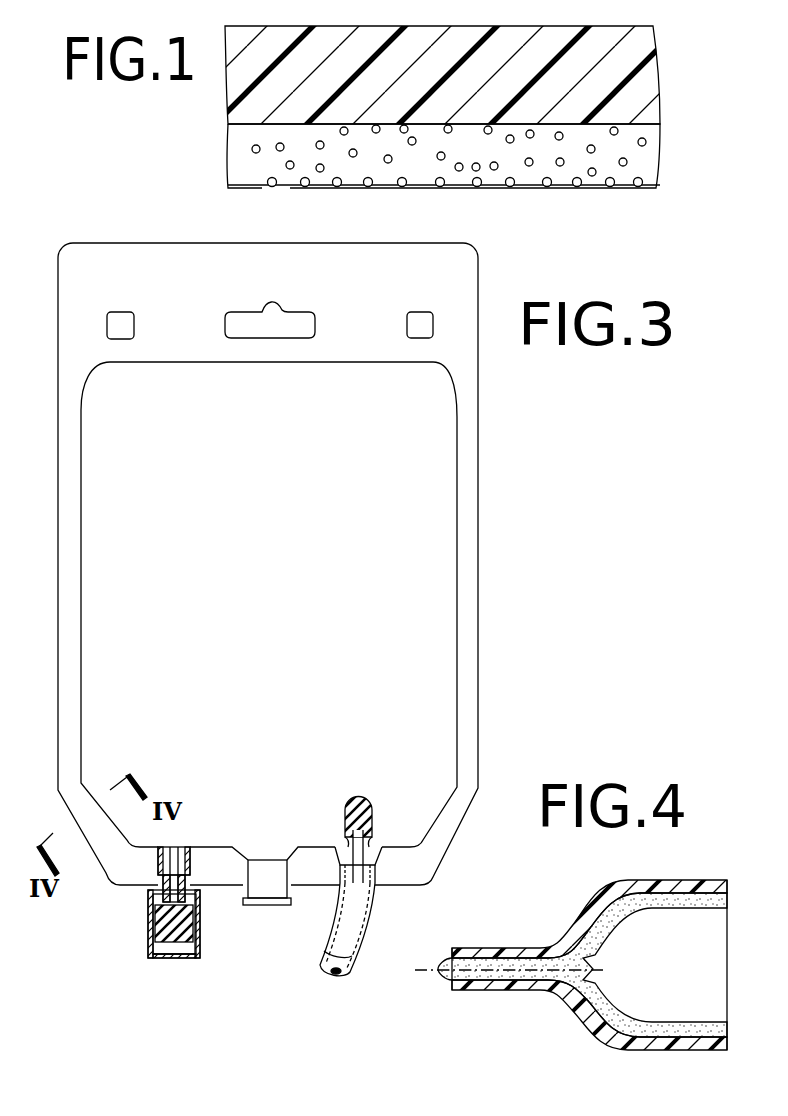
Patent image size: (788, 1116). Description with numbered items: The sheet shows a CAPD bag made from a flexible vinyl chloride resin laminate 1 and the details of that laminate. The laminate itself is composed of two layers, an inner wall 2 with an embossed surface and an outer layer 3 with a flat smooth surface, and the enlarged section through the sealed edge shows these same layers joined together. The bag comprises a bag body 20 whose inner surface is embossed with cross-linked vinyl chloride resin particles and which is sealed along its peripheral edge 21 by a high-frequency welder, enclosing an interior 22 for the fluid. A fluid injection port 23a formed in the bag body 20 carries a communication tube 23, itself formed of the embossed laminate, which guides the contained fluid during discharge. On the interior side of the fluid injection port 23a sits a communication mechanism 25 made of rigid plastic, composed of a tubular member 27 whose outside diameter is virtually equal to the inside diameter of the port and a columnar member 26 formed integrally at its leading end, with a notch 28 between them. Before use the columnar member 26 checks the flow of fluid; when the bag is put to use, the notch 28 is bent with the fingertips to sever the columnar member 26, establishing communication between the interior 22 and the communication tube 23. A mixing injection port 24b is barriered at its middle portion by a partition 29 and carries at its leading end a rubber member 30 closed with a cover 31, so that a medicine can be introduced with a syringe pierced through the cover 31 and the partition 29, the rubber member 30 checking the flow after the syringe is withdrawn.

In FIG. 1, the laminated sheet material 1 is at (677, 115).
In FIG. 1, the inner wall 2 is at (528, 178).
In FIG. 4, the inner wall 2 is at (646, 1030).
In FIG. 1, the outer layer 3 is at (648, 73).
In FIG. 4, the outer layer 3 is at (677, 1040).
In FIG. 3, the bag body 20 is at (480, 492).
In FIG. 4, the bag body 20 is at (571, 961).
In FIG. 3, the peripheral edge 21 is at (468, 427).
In FIG. 4, the peripheral edge 21 is at (490, 948).
In FIG. 3, the interior 22 is at (438, 630).
In FIG. 3, the communication tube 23 is at (352, 964).
In FIG. 3, the fluid injection port 23a is at (380, 873).
In FIG. 3, the mixing injection port 24b is at (200, 880).
In FIG. 3, the communication mechanism 25 is at (361, 836).
In FIG. 3, the columnar member 26 is at (345, 828).
In FIG. 3, the tubular member 27 is at (345, 857).
In FIG. 3, the notch 28 is at (370, 847).
In FIG. 3, the partition 29 is at (170, 856).
In FIG. 3, the rubber member 30 is at (197, 946).
In FIG. 3, the cover 31 is at (178, 960).